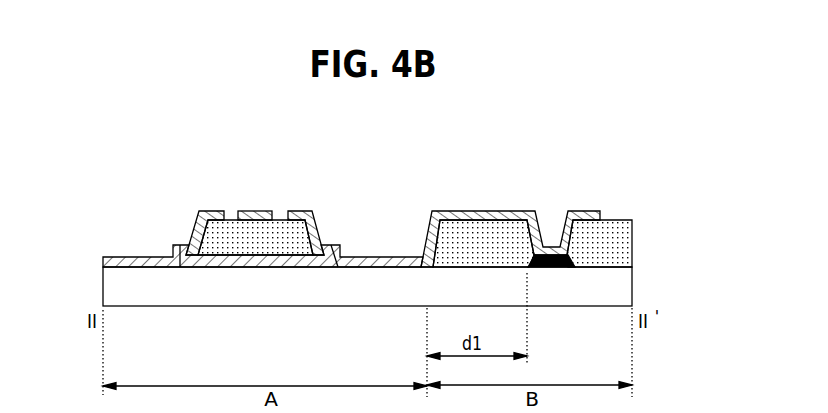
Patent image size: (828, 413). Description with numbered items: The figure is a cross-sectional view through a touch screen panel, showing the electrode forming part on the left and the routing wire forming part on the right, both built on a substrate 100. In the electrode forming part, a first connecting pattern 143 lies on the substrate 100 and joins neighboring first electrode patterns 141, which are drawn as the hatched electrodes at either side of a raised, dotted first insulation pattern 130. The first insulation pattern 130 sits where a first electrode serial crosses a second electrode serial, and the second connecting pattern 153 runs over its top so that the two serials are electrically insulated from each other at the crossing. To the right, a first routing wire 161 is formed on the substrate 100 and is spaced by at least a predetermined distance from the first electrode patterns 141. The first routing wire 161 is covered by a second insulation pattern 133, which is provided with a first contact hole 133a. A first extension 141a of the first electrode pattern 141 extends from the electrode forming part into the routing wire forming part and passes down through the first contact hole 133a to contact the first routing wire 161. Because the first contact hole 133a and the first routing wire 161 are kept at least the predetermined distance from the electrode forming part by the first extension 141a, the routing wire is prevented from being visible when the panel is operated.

The substrate 100 is at (352, 287).
The first insulation pattern 130 is at (215, 240).
The second insulation pattern 133 is at (449, 233).
The first contact hole 133a is at (550, 221).
The first electrode pattern 141 is at (210, 211).
The first extension 141a is at (483, 212).
The first connecting pattern 143 is at (253, 262).
The second connecting pattern 153 is at (257, 211).
The first routing wire 161 is at (557, 268).